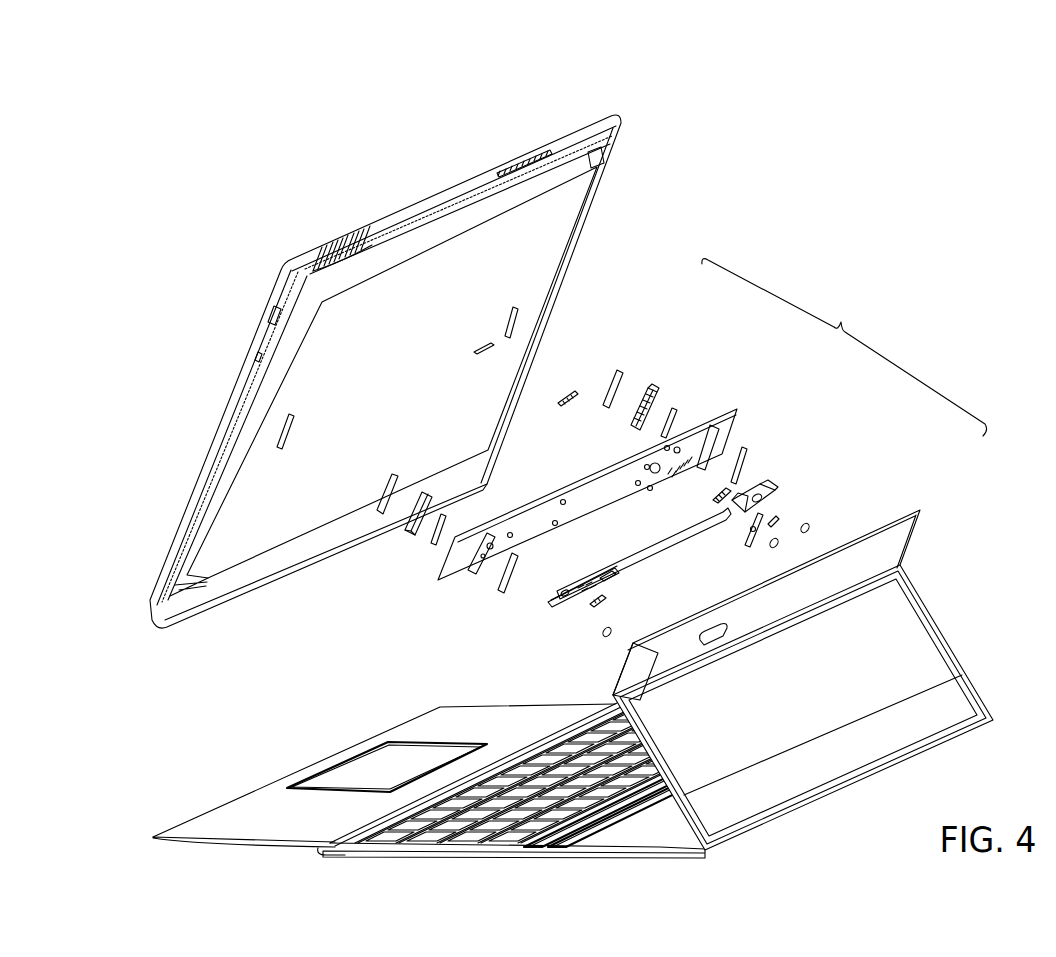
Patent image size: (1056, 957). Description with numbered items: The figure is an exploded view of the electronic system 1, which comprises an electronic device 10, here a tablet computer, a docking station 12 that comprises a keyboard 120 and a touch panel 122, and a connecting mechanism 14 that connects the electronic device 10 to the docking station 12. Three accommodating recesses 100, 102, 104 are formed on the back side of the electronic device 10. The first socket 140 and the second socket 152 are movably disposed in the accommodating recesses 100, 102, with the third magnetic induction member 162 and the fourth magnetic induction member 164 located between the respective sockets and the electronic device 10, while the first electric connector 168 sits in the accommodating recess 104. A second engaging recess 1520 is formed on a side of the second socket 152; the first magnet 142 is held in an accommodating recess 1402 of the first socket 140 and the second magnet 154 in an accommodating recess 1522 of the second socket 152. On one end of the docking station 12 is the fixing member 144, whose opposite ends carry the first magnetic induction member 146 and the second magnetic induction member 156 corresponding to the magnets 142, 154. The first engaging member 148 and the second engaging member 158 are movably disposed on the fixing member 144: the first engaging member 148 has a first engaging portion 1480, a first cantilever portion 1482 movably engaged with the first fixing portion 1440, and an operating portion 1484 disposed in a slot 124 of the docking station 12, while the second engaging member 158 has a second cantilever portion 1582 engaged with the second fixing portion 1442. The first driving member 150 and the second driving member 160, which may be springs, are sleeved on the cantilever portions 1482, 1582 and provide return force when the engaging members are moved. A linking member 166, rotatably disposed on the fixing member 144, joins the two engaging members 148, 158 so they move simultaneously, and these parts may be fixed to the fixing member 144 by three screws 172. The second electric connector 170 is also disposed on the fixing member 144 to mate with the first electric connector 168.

The electronic system 1 is at (890, 187).
The electronic device 10 is at (385, 371).
The accommodating recess 100 is at (278, 430).
The accommodating recess 102 is at (500, 320).
The accommodating recess 104 is at (468, 348).
The docking station 12 is at (803, 680).
The keyboard 120 is at (477, 759).
The touch panel 122 is at (358, 778).
The slot 124 is at (715, 641).
The connecting mechanism 14 is at (662, 450).
The first socket 140 is at (406, 516).
The accommodating recess 1402 is at (428, 545).
The first magnet 142 is at (447, 527).
The fixing member 144 is at (587, 494).
The first fixing portion 1440 is at (512, 537).
The second fixing portion 1442 is at (672, 459).
The first magnetic induction member 146 is at (497, 580).
The first engaging member 148 is at (600, 566).
The first engaging portion 1480 is at (573, 590).
The first cantilever portion 1482 is at (584, 584).
The operating portion 1484 is at (600, 575).
The first driving member 150 is at (590, 606).
The second socket 152 is at (628, 396).
The second engaging recess 1520 is at (630, 410).
The accommodating recess 1522 is at (660, 403).
The second magnet 154 is at (672, 413).
The second magnetic induction member 156 is at (742, 450).
The second engaging member 158 is at (798, 449).
The second cantilever portion 1582 is at (748, 495).
The second driving member 160 is at (777, 487).
The third magnetic induction member 162 is at (383, 485).
The fourth magnetic induction member 164 is at (620, 372).
The linking member 166 is at (745, 535).
The first electric connector 168 is at (570, 390).
The second electric connector 170 is at (712, 498).
The screws 172 is at (610, 630).